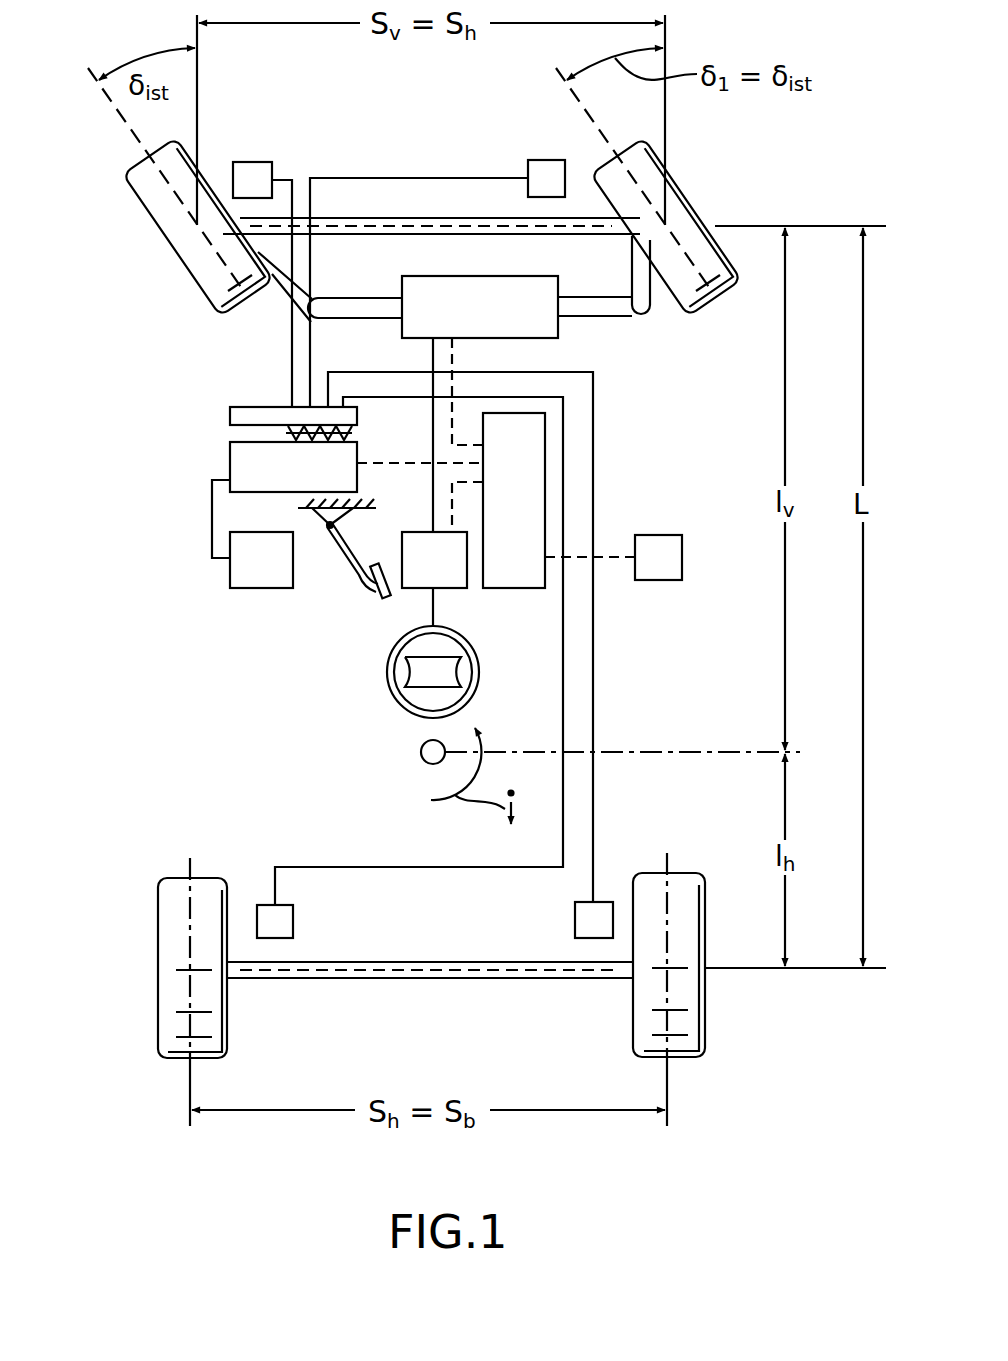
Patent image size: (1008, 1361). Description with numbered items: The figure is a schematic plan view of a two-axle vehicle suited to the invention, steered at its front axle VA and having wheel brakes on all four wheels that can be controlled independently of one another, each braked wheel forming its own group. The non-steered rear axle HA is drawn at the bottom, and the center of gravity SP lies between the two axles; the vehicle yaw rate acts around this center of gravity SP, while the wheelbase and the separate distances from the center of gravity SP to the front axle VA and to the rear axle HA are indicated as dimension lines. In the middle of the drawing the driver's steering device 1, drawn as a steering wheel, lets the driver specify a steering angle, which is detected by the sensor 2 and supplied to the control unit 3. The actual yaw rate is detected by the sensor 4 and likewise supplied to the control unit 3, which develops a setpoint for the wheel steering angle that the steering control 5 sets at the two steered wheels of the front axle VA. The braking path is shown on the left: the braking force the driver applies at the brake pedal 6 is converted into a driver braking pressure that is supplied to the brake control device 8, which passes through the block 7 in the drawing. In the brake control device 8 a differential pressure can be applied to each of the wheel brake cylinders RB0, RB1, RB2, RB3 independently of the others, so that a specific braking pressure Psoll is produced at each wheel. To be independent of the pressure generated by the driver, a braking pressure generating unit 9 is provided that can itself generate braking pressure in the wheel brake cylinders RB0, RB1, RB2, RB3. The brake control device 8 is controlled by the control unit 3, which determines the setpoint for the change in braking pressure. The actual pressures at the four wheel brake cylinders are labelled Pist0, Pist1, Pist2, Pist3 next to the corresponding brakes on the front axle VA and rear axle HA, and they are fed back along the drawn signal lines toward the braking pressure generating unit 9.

The steering device 1 is at (438, 668).
The sensor 2 is at (434, 482).
The control unit 3 is at (498, 463).
The sensor 4 is at (655, 576).
The steering control 5 is at (454, 287).
The brake pedal 6 is at (353, 579).
The brake pressure sensor 7 is at (258, 590).
The brake control device 8 is at (240, 465).
The braking pressure generating unit 9 is at (243, 416).
The front axle VA is at (380, 214).
The rear axle HA is at (288, 982).
The center of gravity SP is at (421, 752).
The wheel brake cylinder RB0 is at (268, 172).
The wheel brake cylinder RB1 is at (528, 170).
The wheel brake cylinder RB2 is at (293, 918).
The wheel brake cylinder RB3 is at (575, 920).
The actual brake pressure front left Pist0 is at (242, 164).
The actual brake pressure front right Pist1 is at (550, 161).
The actual brake pressure rear left Pist2 is at (294, 885).
The actual brake pressure rear right Pist3 is at (618, 879).
The specific braking pressure Psoll is at (280, 434).